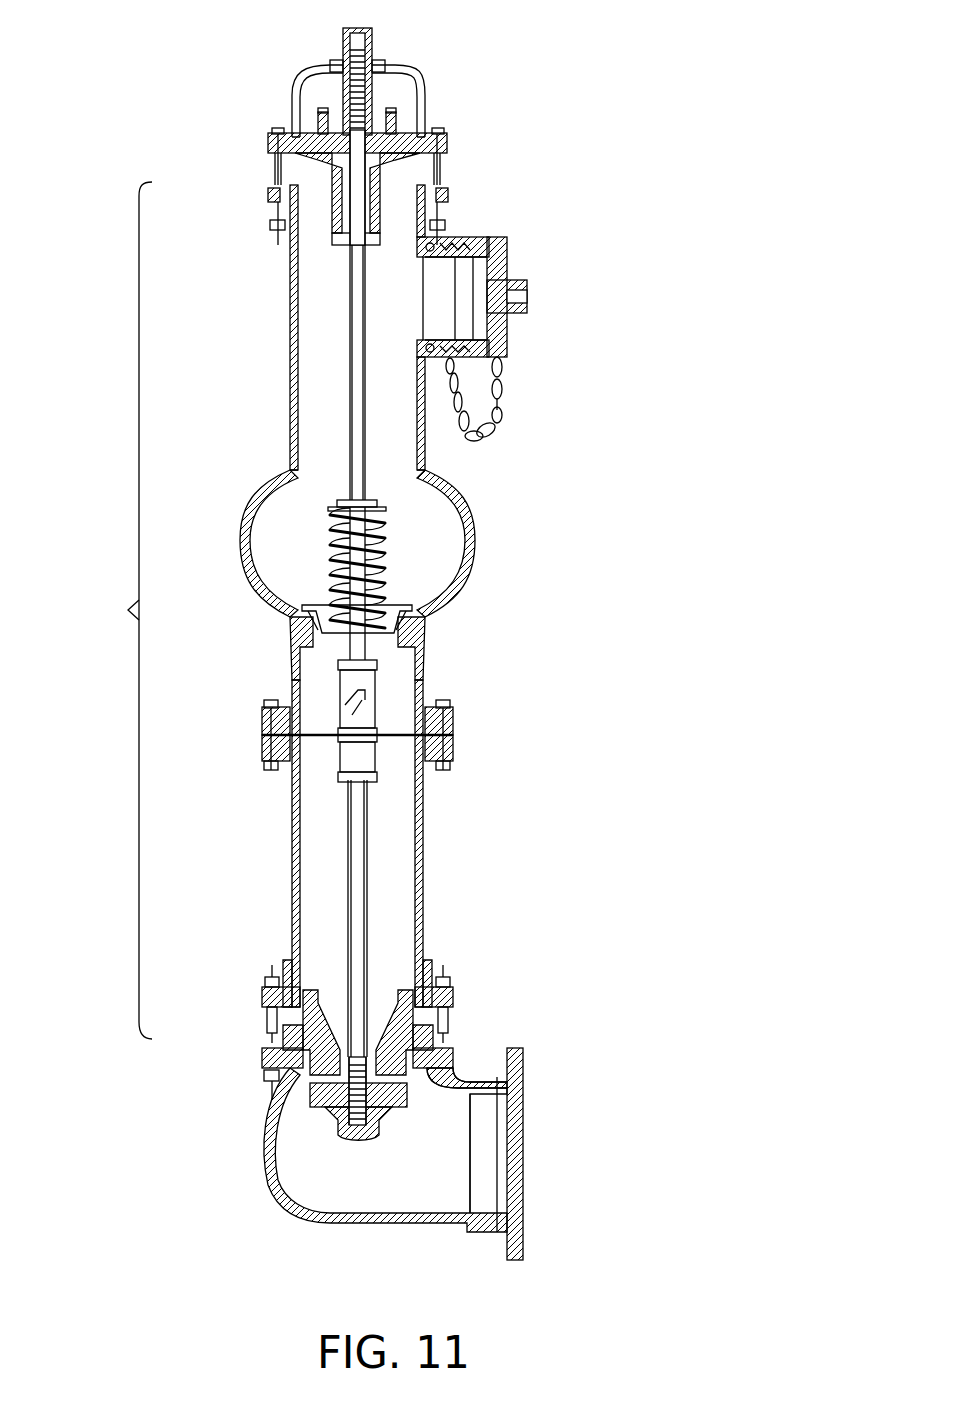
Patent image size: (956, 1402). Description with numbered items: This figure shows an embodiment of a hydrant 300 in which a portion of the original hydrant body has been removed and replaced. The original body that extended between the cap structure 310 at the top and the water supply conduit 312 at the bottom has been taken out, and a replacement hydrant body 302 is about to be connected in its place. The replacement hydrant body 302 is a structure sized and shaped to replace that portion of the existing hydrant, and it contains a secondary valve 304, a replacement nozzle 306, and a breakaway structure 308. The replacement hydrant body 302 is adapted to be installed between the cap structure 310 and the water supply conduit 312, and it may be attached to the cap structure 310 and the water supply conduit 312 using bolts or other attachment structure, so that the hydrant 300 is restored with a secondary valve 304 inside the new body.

The hydrant 300 is at (487, 115).
The replacement hydrant body 302 is at (273, 619).
The secondary valve 304 is at (383, 547).
The replacement nozzle 306 is at (498, 250).
The breakaway structure 308 is at (453, 737).
The cap structure 310 is at (425, 83).
The water supply conduit 312 is at (270, 1147).